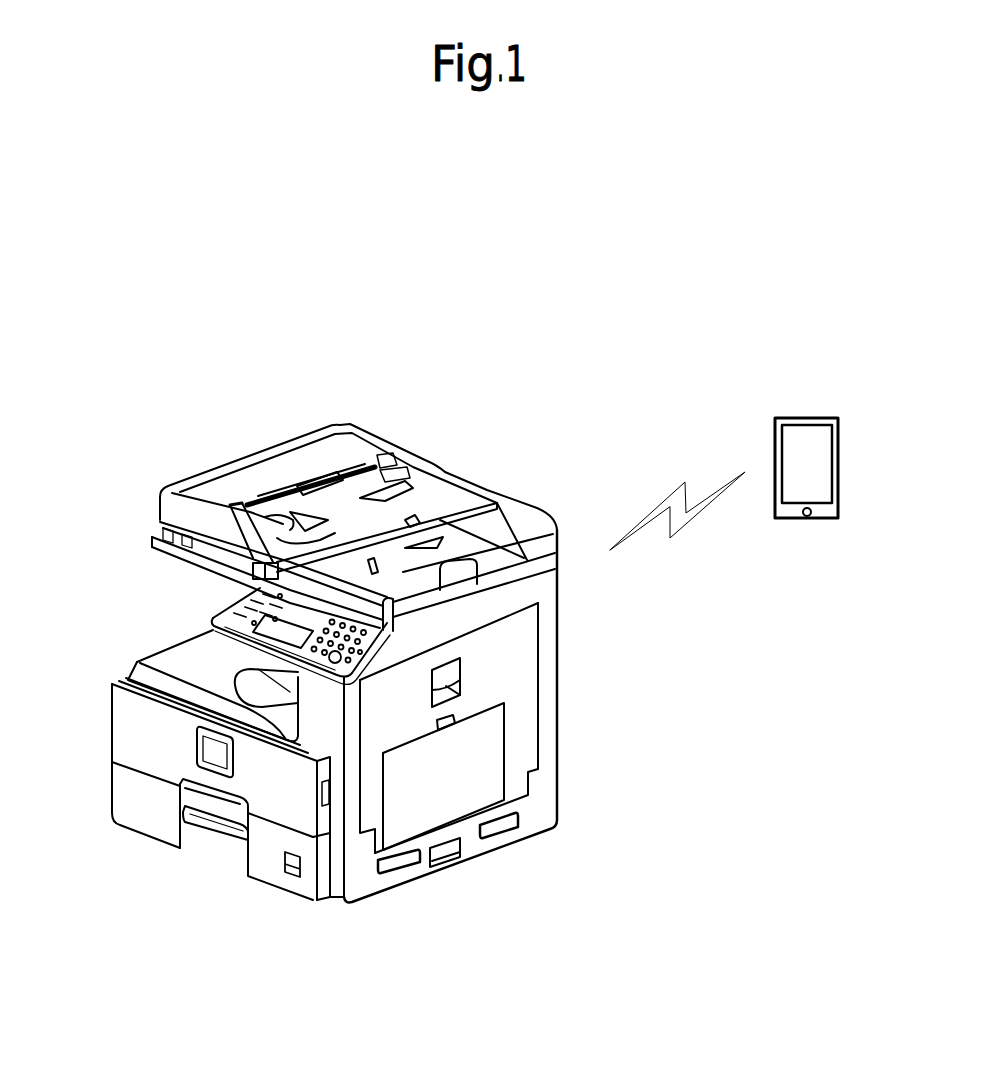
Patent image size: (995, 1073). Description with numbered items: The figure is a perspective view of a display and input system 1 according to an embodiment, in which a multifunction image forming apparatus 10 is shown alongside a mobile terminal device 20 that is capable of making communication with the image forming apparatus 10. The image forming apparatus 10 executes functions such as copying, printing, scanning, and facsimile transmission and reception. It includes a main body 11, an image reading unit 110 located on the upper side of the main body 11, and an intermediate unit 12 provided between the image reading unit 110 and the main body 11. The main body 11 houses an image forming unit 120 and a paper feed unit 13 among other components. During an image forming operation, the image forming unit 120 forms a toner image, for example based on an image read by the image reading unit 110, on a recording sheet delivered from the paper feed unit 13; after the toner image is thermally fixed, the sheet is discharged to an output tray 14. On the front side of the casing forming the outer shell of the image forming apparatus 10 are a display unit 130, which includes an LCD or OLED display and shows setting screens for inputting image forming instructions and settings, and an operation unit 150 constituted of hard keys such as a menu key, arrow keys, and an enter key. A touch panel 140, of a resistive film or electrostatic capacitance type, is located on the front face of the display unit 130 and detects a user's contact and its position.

The display and input system 1 is at (583, 318).
The image forming apparatus 10 is at (477, 412).
The mobile terminal device 20 is at (822, 419).
The image reading unit 110 is at (546, 508).
The main body 11 is at (576, 623).
The image forming unit 120 is at (561, 682).
The intermediate unit 12 is at (332, 724).
The paper feed unit 13 is at (135, 745).
The output tray 14 is at (143, 658).
The display unit 130 is at (215, 620).
The touch panel 140 is at (243, 610).
The operation unit 150 is at (265, 600).